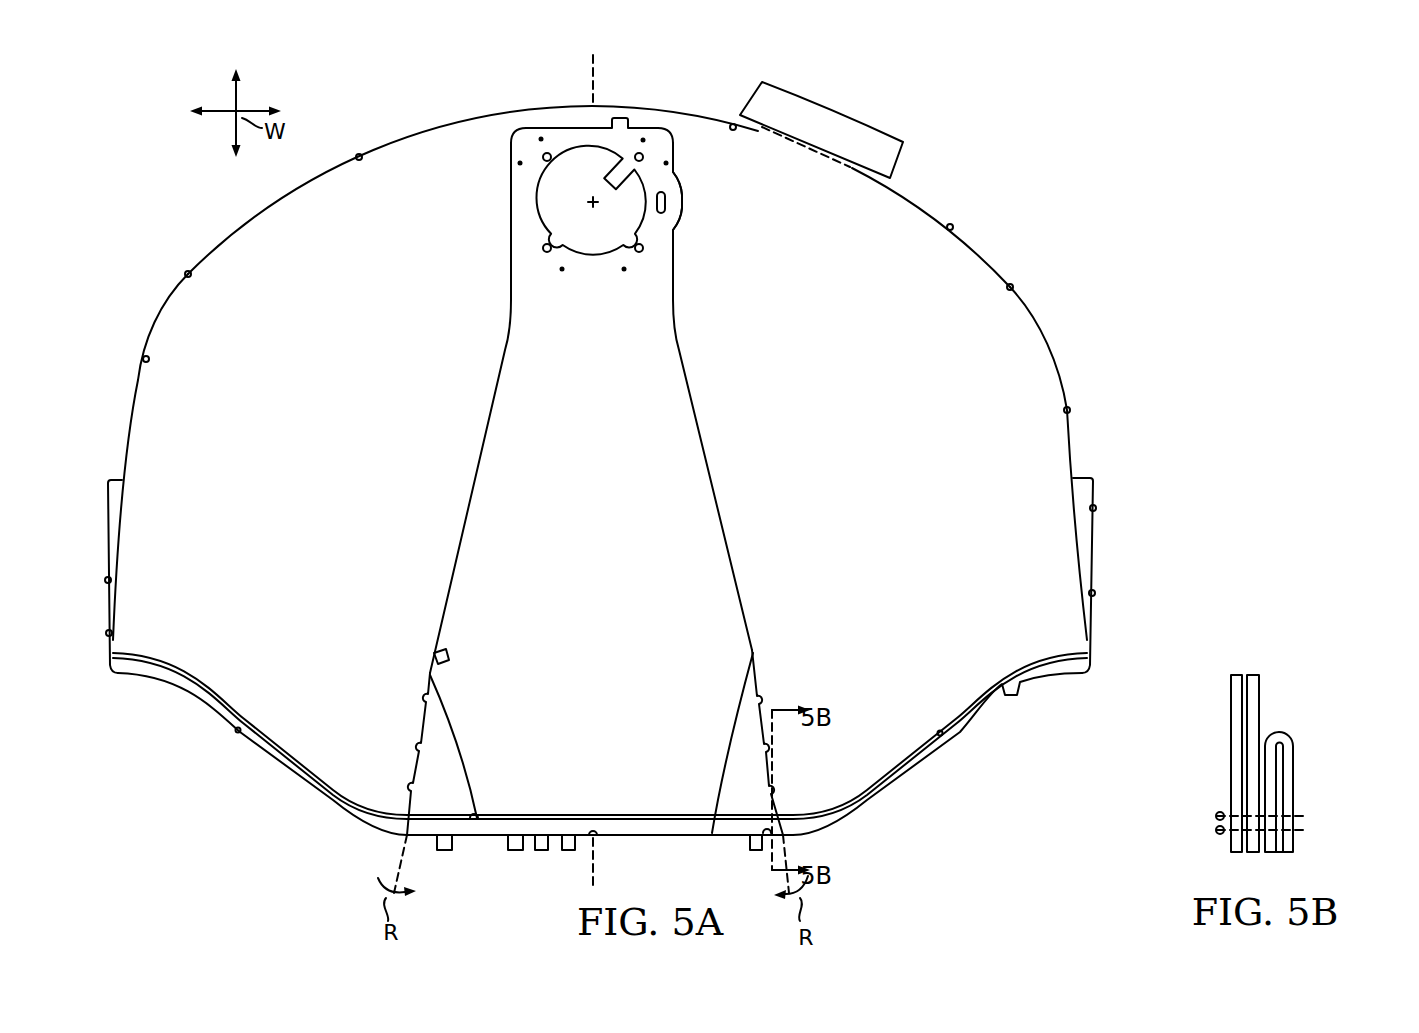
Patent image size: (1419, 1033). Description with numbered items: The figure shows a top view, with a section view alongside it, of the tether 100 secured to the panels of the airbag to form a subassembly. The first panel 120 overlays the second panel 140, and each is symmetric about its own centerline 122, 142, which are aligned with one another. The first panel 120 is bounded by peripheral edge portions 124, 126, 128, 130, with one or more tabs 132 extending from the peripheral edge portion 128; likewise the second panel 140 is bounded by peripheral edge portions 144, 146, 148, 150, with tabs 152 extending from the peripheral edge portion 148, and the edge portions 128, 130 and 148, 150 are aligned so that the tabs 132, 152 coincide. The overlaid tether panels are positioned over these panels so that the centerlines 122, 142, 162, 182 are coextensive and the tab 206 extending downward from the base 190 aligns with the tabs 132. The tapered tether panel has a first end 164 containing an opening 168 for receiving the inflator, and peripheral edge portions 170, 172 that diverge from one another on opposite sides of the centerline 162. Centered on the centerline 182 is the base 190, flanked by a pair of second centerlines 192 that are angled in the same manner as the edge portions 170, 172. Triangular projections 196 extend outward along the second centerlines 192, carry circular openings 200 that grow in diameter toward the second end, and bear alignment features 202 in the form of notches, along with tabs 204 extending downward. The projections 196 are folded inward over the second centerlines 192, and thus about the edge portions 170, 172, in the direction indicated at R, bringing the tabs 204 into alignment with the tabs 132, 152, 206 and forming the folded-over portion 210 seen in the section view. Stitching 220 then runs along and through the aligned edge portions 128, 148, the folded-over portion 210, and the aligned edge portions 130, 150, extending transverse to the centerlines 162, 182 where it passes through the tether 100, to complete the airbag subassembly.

In FIG. 5A, the tether 100 is at (588, 505).
In FIG. 5A, the first panel 120 is at (600, 361).
In FIG. 5B, the first panel 120 is at (1271, 690).
In FIG. 5A, the centerline 122 is at (470, 80).
In FIG. 5A, the peripheral edge portion 124 is at (262, 203).
In FIG. 5A, the peripheral edge portion 126 is at (974, 243).
In FIG. 5A, the peripheral edge portion 128 is at (262, 754).
In FIG. 5A, the peripheral edge portion 130 is at (937, 760).
In FIG. 5A, the tab 132 is at (600, 883).
In FIG. 5A, the second panel 140 is at (621, 689).
In FIG. 5B, the second panel 140 is at (1219, 693).
In FIG. 5A, the centerline 142 is at (470, 80).
In FIG. 5A, the peripheral edge portion 144 is at (120, 478).
In FIG. 5A, the peripheral edge portion 146 is at (1085, 478).
In FIG. 5A, the peripheral edge portion 148 is at (280, 782).
In FIG. 5A, the peripheral edge portion 150 is at (865, 812).
In FIG. 5A, the tab 152 is at (548, 850).
In FIG. 5A, the centerline 162 is at (470, 80).
In FIG. 5A, the first end 164 is at (696, 186).
In FIG. 5A, the opening 168 is at (570, 203).
In FIG. 5A, the peripheral edge portion 170 is at (470, 492).
In FIG. 5A, the peripheral edge portion 172 is at (718, 492).
In FIG. 5A, the centerline 182 is at (593, 85).
In FIG. 5A, the base 190 is at (592, 410).
In FIG. 5B, the base 190 is at (1272, 808).
In FIG. 5A, the second centerline 192 is at (397, 860).
In FIG. 5A, the projection 196 is at (442, 738).
In FIG. 5B, the projection 196 is at (1293, 803).
In FIG. 5A, the opening 200 is at (393, 779).
In FIG. 5A, the alignment feature 202 is at (473, 820).
In FIG. 5A, the tab 204 is at (442, 850).
In FIG. 5A, the tab 206 is at (513, 850).
In FIG. 5A, the folded-over portion 210 is at (782, 690).
In FIG. 5B, the folded-over portion 210 is at (1326, 784).
In FIG. 5A, the stitching 220 is at (900, 760).
In FIG. 5B, the stitching 220 is at (1217, 818).